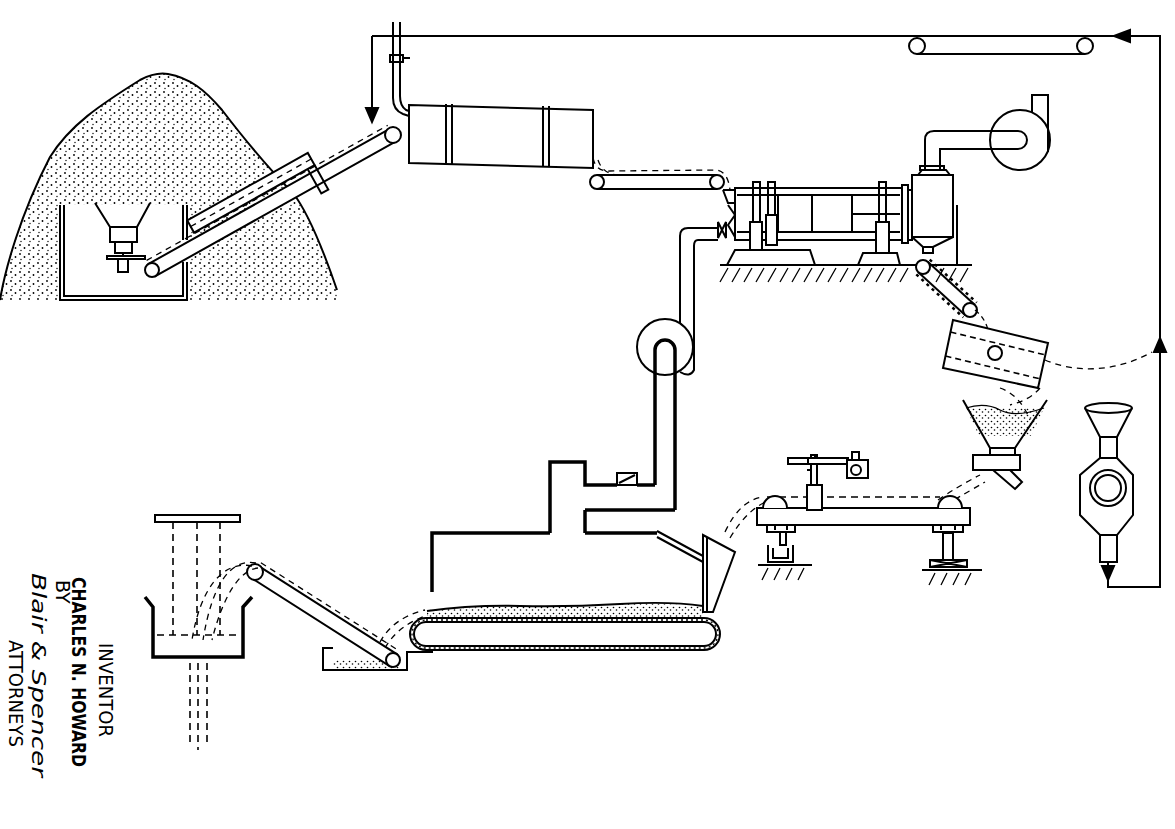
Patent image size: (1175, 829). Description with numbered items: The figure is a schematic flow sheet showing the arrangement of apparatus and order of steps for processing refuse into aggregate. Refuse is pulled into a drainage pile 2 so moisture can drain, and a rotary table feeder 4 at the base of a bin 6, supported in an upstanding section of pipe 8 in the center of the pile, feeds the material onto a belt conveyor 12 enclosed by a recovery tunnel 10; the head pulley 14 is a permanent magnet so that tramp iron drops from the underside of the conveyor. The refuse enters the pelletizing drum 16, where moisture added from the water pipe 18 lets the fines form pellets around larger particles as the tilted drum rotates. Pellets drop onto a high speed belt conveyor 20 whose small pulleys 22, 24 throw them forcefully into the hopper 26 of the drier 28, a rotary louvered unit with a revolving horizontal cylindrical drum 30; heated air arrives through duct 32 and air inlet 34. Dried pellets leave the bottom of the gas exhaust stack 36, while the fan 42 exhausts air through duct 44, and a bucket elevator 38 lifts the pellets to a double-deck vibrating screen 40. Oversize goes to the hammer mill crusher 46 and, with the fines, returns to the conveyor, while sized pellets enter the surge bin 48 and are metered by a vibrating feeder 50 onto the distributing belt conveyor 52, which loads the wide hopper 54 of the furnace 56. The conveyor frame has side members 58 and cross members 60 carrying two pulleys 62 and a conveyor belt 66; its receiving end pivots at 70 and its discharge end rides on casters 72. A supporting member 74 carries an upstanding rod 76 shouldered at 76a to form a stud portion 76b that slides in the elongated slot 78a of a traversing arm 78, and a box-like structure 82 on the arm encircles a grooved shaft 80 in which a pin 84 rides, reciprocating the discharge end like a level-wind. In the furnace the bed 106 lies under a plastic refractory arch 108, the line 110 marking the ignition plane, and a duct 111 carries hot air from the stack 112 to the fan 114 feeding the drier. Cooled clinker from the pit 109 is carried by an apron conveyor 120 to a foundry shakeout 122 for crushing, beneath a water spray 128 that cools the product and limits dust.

The drainage pile 2 is at (197, 104).
The rotary table feeder 4 is at (117, 271).
The bin 6 is at (143, 210).
The upstanding section of pipe 8 is at (68, 303).
The recovery tunnel 10 is at (313, 205).
The belt conveyor 12 is at (351, 161).
The head pulley 14 is at (395, 144).
The pelletizing drum 16 is at (474, 168).
The water pipe 18 is at (401, 80).
The high speed belt conveyor 20 is at (648, 190).
The pulley 22 is at (593, 188).
The pulley 24 is at (715, 176).
The hopper 26 is at (723, 196).
The drier 28 is at (834, 167).
The horizontal cylindrical drum 30 is at (835, 228).
The duct 32 is at (680, 268).
The air inlet 34 is at (722, 239).
The gas exhaust stack 36 is at (954, 195).
The bucket elevator 38 is at (955, 278).
The double-deck vibrating screen 40 is at (1018, 335).
The fan 42 is at (1045, 163).
The duct 44 is at (972, 135).
The hammer mill crusher 46 is at (1121, 462).
The surge bin 48 is at (1041, 400).
The vibrating feeder 50 is at (1021, 464).
The distributing belt conveyor 52 is at (873, 527).
The hopper 54 is at (722, 583).
The furnace 56 is at (667, 532).
The side members 58 is at (972, 515).
The cross members 60 is at (796, 529).
The pulleys 62 is at (768, 500).
The conveyor belt 66 is at (926, 500).
The pivot 70 is at (955, 550).
The casters 72 is at (794, 556).
The supporting member 74 is at (807, 492).
The upstanding bar or rod 76 is at (818, 478).
The shoulder 76a is at (807, 468).
The stud portion 76b is at (816, 455).
The traversing arm 78 is at (840, 458).
The elongated slot 78a is at (797, 457).
The shaft 80 is at (870, 467).
The box-like structure 82 is at (860, 480).
The pin 84 is at (861, 452).
The bed 106 is at (447, 606).
The plastic refractory arch 108 is at (672, 541).
The pit 109 is at (418, 655).
The ignition plane line 110 is at (580, 612).
The duct 111 is at (677, 418).
The stack 112 is at (589, 473).
The fan 114 is at (693, 342).
The apron conveyor 120 is at (299, 589).
The foundry shakeout 122 is at (246, 649).
The water spray 128 is at (242, 517).